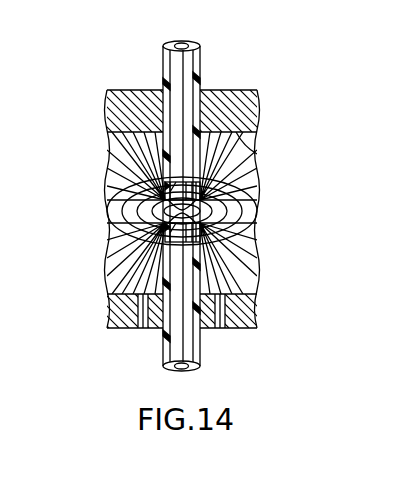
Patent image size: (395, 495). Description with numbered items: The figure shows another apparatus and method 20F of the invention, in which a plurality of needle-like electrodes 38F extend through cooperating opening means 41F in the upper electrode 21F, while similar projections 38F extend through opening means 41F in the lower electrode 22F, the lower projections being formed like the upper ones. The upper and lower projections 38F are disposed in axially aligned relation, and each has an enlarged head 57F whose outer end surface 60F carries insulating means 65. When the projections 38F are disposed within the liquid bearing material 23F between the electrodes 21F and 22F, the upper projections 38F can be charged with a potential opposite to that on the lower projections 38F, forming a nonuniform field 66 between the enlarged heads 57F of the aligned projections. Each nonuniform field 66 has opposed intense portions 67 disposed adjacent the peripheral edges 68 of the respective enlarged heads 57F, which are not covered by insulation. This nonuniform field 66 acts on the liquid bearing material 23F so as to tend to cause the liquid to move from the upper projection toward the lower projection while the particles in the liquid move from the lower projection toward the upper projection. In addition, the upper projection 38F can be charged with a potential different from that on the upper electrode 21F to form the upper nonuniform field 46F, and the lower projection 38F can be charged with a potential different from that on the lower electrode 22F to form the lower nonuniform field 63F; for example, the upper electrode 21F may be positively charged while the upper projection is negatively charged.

The apparatus and method 20F is at (278, 80).
The upper electrode 21F is at (109, 108).
The lower electrode 22F is at (109, 311).
The liquid bearing material 23F is at (112, 152).
The needle-like electrode 38F is at (178, 63).
The opening means 41F is at (163, 98).
The upper nonuniform field 46F is at (250, 149).
The enlarged head 57F is at (110, 178).
The outer end surface 60F is at (115, 211).
The lower nonuniform field 63F is at (255, 268).
The insulating means 65 is at (257, 188).
The nonuniform field 66 is at (257, 203).
The intense portions 67 is at (135, 240).
The peripheral edges 68 is at (136, 190).